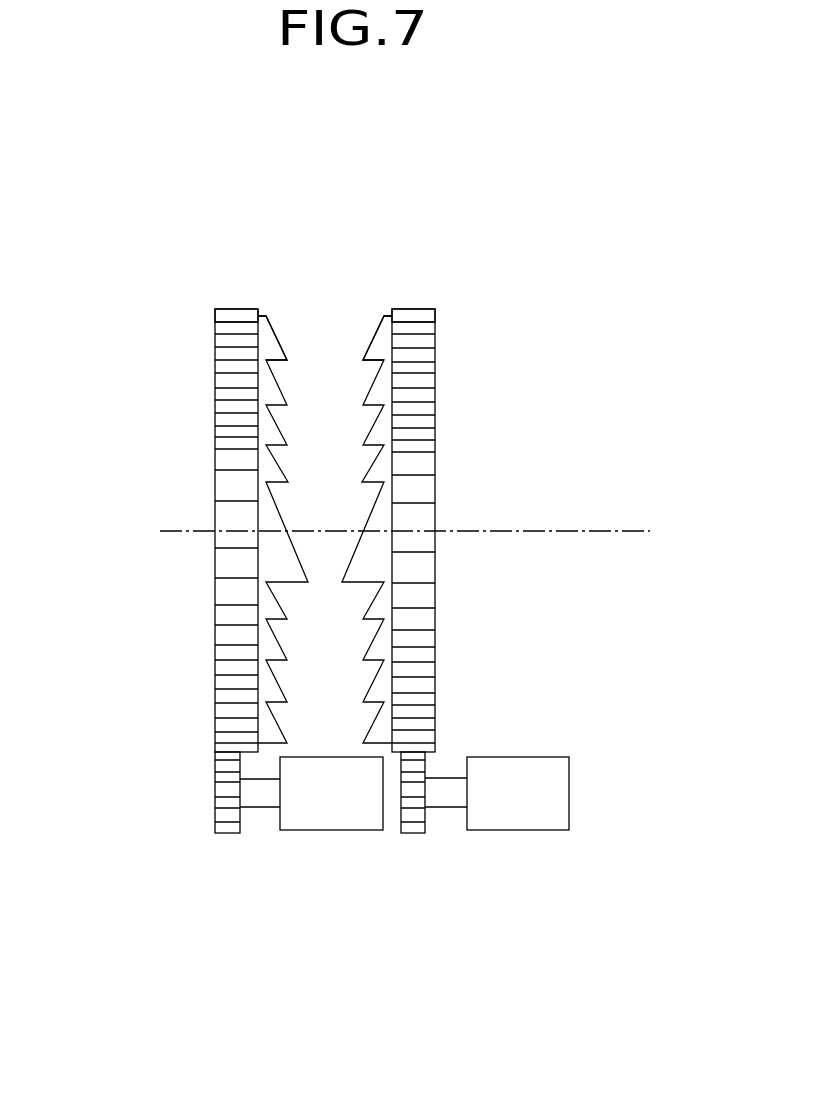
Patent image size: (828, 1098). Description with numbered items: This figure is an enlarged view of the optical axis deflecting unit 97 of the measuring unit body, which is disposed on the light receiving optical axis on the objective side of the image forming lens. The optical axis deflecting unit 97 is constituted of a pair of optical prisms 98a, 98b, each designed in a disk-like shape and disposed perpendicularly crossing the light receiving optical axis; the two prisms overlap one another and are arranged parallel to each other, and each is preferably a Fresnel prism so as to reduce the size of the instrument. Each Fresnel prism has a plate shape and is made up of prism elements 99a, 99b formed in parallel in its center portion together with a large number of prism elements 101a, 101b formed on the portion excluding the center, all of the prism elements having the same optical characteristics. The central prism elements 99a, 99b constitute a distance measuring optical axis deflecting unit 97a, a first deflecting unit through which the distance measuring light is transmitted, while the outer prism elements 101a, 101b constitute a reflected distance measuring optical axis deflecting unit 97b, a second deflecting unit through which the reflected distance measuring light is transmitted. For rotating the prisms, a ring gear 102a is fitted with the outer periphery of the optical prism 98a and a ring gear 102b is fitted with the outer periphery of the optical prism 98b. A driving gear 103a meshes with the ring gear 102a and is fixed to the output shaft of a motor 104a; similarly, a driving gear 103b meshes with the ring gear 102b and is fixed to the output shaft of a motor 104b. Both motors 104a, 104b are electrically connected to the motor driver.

The optical axis deflecting unit 97 is at (488, 320).
The distance measuring optical axis deflecting unit 97a is at (215, 548).
The reflected distance measuring optical axis deflecting unit 97b is at (215, 389).
The optical prism 98a is at (215, 690).
The optical prism 98b is at (435, 659).
The prism element 99a is at (278, 518).
The prism element 99b is at (353, 555).
The prism element 101a is at (280, 338).
The prism element 101b is at (367, 340).
The ring gear 102a is at (237, 309).
The ring gear 102b is at (413, 309).
The driving gear 103a is at (218, 834).
The driving gear 103b is at (415, 834).
The motor 104a is at (300, 831).
The motor 104b is at (530, 831).